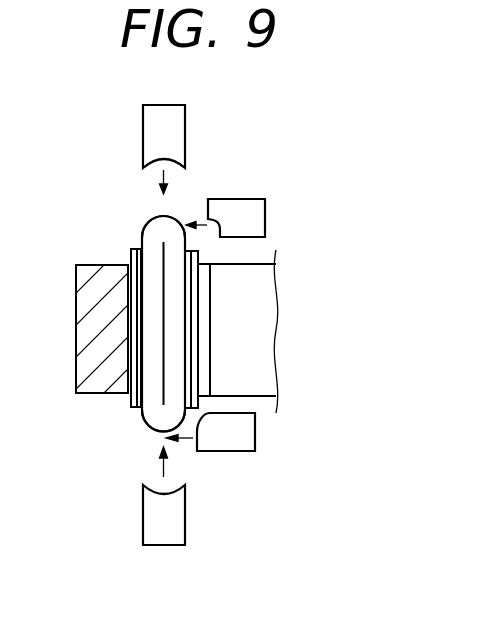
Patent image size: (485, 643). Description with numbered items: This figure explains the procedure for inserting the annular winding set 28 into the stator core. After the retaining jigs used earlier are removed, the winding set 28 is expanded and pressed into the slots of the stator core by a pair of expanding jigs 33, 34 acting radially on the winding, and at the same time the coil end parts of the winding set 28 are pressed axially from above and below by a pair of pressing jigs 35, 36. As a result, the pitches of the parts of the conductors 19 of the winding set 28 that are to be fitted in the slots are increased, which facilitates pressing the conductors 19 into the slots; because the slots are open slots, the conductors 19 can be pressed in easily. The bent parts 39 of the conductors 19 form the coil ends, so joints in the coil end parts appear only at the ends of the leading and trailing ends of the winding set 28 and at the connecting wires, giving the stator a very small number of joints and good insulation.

The conductor 19 is at (143, 230).
The winding set 28 is at (146, 421).
The expanding jig 33 is at (242, 208).
The expanding jig 34 is at (255, 440).
The pressing jig 35 is at (186, 107).
The pressing jig 36 is at (185, 538).
The bent part 39 is at (176, 218).